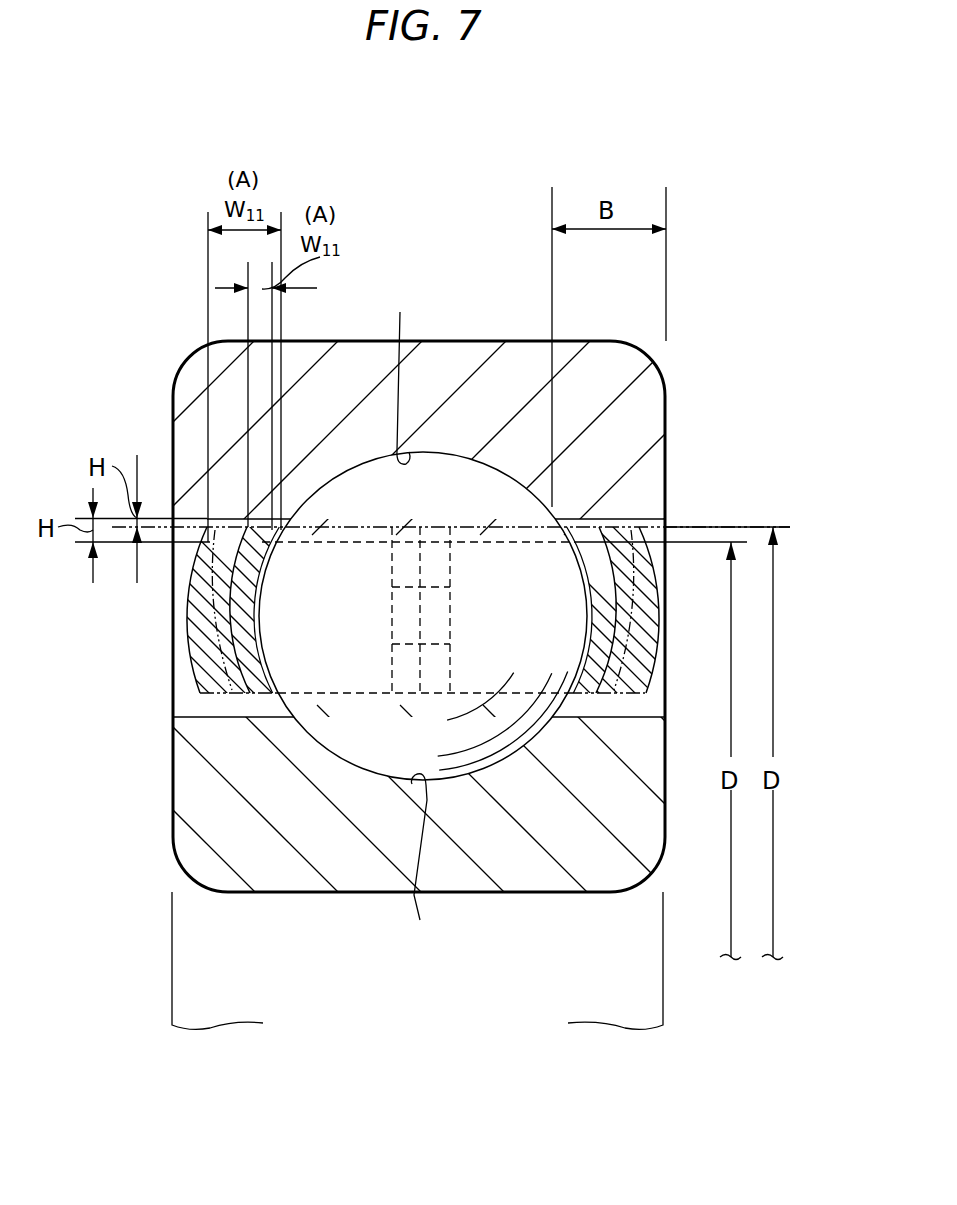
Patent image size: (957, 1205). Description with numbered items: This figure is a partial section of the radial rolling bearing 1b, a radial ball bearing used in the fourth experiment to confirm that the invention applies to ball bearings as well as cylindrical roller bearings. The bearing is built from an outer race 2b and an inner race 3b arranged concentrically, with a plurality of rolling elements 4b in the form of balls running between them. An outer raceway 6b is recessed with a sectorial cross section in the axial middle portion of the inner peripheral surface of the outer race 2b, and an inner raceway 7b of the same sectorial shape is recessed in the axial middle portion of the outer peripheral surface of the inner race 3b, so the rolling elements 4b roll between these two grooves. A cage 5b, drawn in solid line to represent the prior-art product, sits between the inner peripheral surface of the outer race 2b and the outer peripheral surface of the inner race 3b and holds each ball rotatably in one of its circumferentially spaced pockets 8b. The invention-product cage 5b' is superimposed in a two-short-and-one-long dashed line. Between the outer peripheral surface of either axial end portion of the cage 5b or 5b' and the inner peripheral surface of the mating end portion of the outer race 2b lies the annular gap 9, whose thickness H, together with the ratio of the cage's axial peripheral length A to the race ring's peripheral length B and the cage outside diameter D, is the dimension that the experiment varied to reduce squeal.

The radial rolling bearing 1b is at (483, 320).
The outer race 2b is at (633, 437).
The inner race 3b is at (632, 750).
The rolling elements 4b is at (563, 573).
The cage 5b is at (395, 610).
The cage 5b' is at (451, 612).
The outer raceway 6b is at (401, 374).
The inner raceway 7b is at (423, 866).
The pockets 8b is at (262, 643).
The gap 9 is at (223, 517).